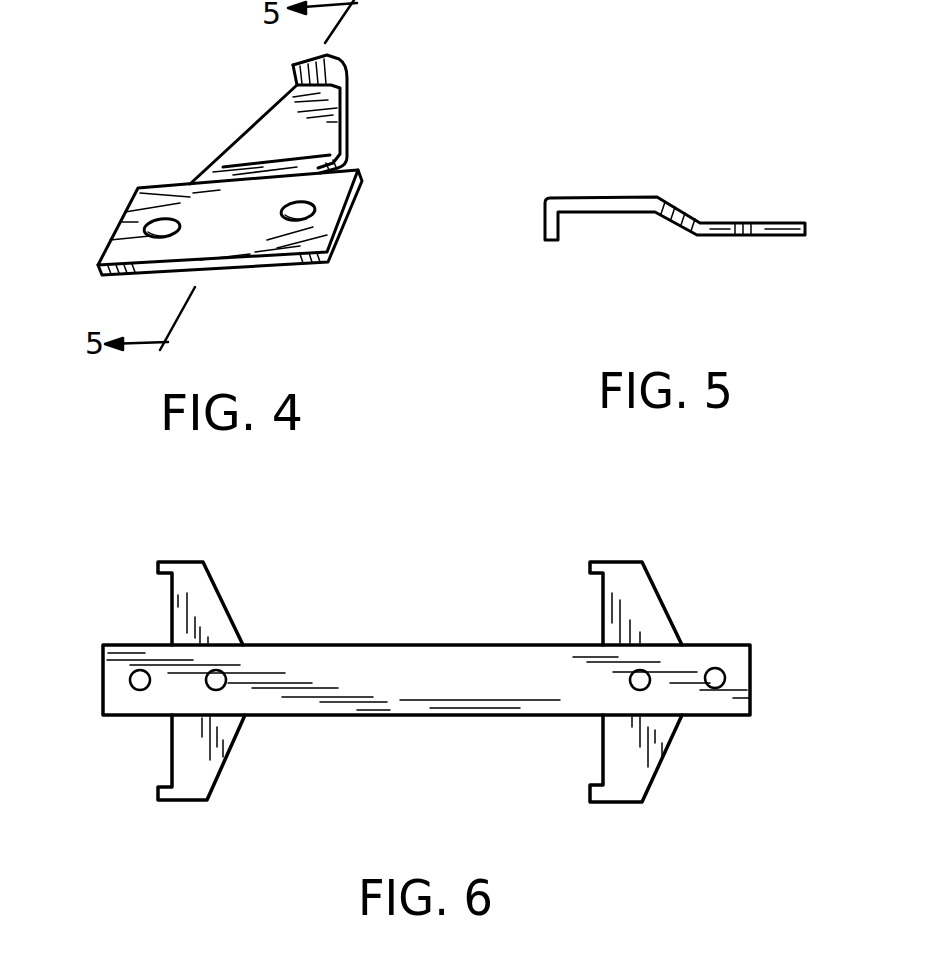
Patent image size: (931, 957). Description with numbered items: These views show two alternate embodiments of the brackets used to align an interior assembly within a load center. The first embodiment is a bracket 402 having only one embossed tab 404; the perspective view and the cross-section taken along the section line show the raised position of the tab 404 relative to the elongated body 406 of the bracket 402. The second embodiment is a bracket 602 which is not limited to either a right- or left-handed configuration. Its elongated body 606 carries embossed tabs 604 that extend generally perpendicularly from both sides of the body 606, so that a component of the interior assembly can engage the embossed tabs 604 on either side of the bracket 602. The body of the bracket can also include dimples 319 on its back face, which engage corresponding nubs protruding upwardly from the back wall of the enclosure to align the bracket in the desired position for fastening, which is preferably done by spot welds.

In FIG. 4, the bracket 402 is at (138, 185).
In FIG. 5, the bracket 402 is at (770, 237).
In FIG. 4, the embossed tab 404 is at (307, 120).
In FIG. 5, the embossed tab 404 is at (602, 198).
In FIG. 4, the elongated body 406 is at (243, 230).
In FIG. 6, the bracket 602 is at (352, 657).
In FIG. 6, the embossed tabs 604 is at (205, 598).
In FIG. 6, the elongated body 606 is at (455, 675).
In FIG. 6, the dimples 319 is at (720, 670).